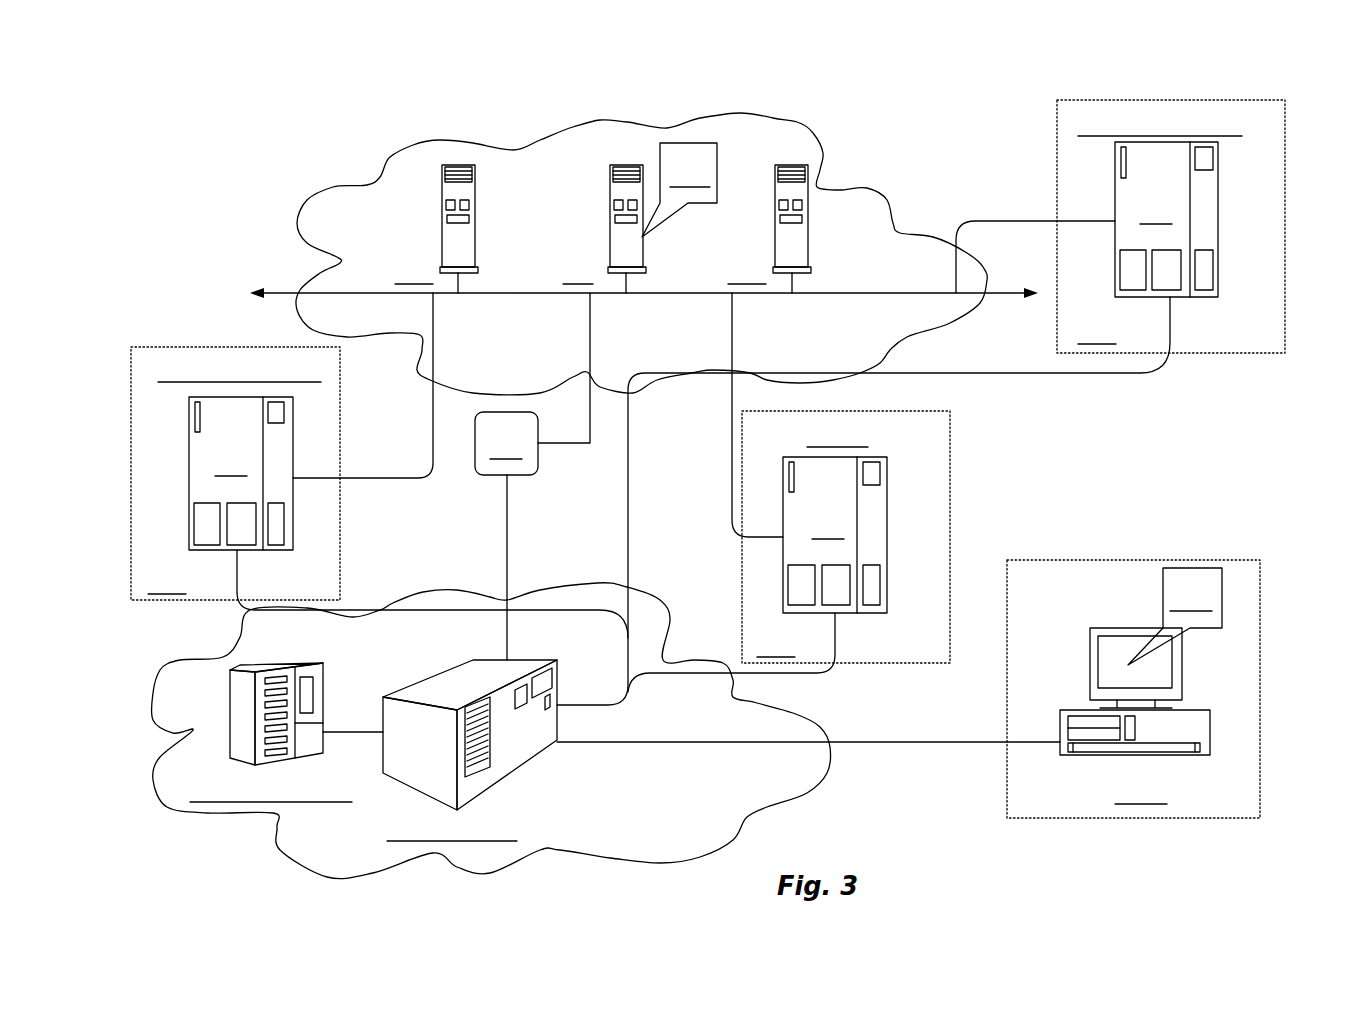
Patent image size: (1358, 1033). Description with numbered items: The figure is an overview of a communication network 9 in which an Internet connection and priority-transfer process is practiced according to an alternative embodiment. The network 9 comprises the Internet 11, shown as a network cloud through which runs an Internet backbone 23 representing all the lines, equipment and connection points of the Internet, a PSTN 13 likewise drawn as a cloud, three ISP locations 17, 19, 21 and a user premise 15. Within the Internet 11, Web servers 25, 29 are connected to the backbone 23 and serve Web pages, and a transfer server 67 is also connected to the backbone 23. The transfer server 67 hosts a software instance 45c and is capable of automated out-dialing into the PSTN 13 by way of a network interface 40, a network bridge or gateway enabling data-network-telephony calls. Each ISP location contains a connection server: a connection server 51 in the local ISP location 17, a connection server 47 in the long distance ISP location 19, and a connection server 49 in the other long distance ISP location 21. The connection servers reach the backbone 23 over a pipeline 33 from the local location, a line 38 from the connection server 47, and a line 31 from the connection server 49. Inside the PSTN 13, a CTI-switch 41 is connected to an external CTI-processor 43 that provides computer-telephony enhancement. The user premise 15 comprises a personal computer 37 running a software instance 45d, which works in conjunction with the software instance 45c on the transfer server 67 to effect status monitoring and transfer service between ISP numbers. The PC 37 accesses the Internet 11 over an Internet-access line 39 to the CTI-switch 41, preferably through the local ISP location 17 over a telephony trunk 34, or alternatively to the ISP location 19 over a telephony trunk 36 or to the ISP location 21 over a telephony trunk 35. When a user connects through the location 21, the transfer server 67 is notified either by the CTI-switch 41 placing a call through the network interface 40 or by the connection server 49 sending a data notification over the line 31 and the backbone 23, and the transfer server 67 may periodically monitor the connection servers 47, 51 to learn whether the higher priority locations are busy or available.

The communication network 9 is at (641, 209).
The Internet 11 is at (798, 121).
The PSTN 13 is at (463, 588).
The user premise 15 is at (1173, 689).
The ISP location 17 is at (881, 533).
The ISP location 19 is at (229, 428).
The ISP location 21 is at (1122, 188).
The Internet backbone 23 is at (541, 303).
The Web server 25 is at (476, 228).
The Web server 29 is at (808, 211).
The line 31 is at (1038, 220).
The pipeline 33 is at (731, 497).
The telephony trunk 34 is at (723, 675).
The telephony trunk 35 is at (627, 558).
The telephony trunk 36 is at (538, 611).
The personal computer 37 is at (1090, 675).
The line 38 is at (430, 443).
The Internet-access line 39 is at (930, 743).
The network interface 40 is at (474, 447).
The CTI-switch 41 is at (528, 768).
The CTI-processor 43 is at (228, 732).
The software instance 45c is at (718, 166).
The software instance 45d is at (1163, 617).
The connection server 47 is at (188, 478).
The connection server 49 is at (1218, 261).
The connection server 51 is at (887, 555).
The transfer server 67 is at (610, 245).